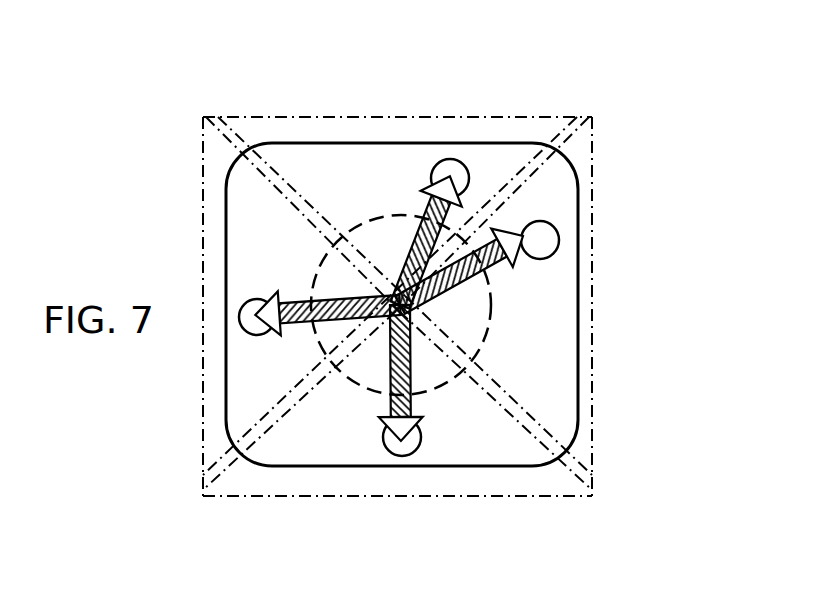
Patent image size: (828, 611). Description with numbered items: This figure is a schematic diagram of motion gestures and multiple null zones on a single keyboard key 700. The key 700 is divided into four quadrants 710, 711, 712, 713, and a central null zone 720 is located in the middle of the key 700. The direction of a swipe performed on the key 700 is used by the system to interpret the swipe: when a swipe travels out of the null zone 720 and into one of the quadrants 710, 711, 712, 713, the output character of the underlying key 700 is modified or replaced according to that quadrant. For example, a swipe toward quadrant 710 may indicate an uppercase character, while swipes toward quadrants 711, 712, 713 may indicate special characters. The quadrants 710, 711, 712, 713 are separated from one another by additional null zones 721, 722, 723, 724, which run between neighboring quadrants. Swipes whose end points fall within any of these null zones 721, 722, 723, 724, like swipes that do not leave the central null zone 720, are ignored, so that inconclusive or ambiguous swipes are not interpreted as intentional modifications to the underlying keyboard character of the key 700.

The key 700 is at (407, 142).
The quadrant 710 is at (472, 117).
The quadrant 711 is at (207, 183).
The quadrant 712 is at (395, 497).
The quadrant 713 is at (592, 307).
The null zone 720 is at (382, 218).
The null zone 721 is at (218, 493).
The null zone 722 is at (588, 495).
The null zone 723 is at (585, 122).
The null zone 724 is at (207, 130).